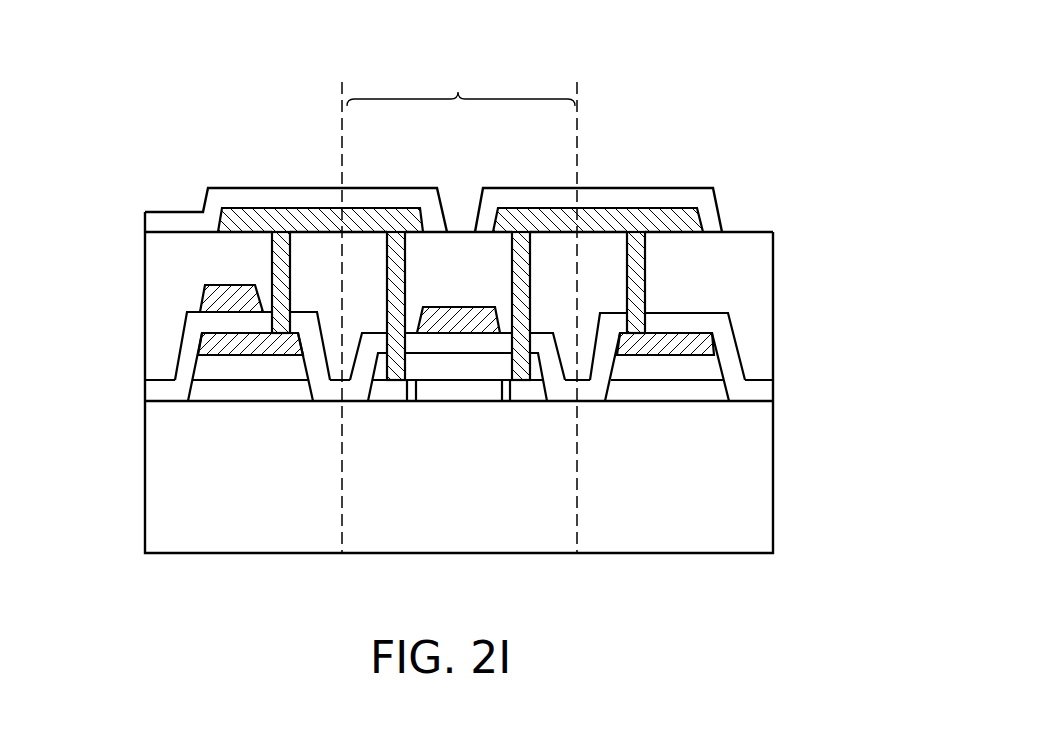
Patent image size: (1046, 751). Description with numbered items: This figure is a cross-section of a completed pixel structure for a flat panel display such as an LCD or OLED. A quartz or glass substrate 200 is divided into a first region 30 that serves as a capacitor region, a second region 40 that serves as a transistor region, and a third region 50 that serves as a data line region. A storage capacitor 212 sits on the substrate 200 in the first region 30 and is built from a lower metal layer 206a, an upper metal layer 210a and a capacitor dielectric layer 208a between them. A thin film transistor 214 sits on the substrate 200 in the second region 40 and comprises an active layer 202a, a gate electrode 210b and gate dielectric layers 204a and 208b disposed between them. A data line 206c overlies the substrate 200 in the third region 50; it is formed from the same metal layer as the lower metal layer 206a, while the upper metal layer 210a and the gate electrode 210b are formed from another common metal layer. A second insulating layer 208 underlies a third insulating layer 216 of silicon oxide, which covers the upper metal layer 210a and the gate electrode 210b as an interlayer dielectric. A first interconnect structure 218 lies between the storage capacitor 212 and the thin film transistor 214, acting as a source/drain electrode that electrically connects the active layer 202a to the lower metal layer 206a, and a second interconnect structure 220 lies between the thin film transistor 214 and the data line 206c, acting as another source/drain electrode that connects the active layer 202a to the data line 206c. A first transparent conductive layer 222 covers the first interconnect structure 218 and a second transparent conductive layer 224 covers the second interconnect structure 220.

The first region 30 is at (228, 51).
The second region 40 is at (444, 51).
The third region 50 is at (648, 51).
The substrate 200 is at (773, 471).
The active layer 202a is at (460, 370).
The first gate dielectric layer 204a is at (428, 363).
The lower metal layer 206a is at (207, 342).
The data line 206c is at (712, 342).
The second insulating layer 208 is at (773, 390).
The capacitor dielectric layer 208a is at (210, 326).
The gate dielectric layer 208b is at (507, 350).
The upper metal layer 210a is at (207, 294).
The gate electrode 210b is at (465, 305).
The storage capacitor 212 is at (174, 342).
The thin film transistor 214 is at (461, 85).
The third insulating layer 216 is at (773, 245).
The first interconnect structure 218 is at (250, 214).
The second interconnect structure 220 is at (697, 213).
The first transparent conductive layer 222 is at (173, 214).
The second transparent conductive layer 224 is at (640, 202).